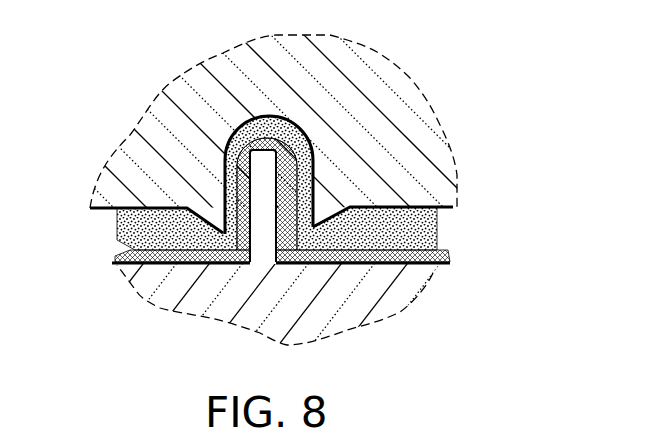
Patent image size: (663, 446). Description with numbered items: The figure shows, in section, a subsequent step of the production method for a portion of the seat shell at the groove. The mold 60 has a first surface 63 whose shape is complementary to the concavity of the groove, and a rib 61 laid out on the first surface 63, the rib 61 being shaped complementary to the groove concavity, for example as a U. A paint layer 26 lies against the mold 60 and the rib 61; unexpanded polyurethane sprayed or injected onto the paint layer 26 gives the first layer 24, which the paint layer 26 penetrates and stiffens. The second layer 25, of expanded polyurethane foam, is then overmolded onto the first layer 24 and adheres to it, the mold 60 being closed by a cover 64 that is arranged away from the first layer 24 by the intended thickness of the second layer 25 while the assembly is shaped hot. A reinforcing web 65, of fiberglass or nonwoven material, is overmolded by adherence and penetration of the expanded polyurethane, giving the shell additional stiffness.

The first layer 24 is at (353, 263).
The second layer 25 is at (435, 220).
The paint layer 26 is at (435, 242).
The mold 60 is at (345, 318).
The rib 61 is at (263, 198).
The first surface 63 is at (443, 265).
The cover 64 is at (408, 113).
The reinforcing web 65 is at (380, 205).